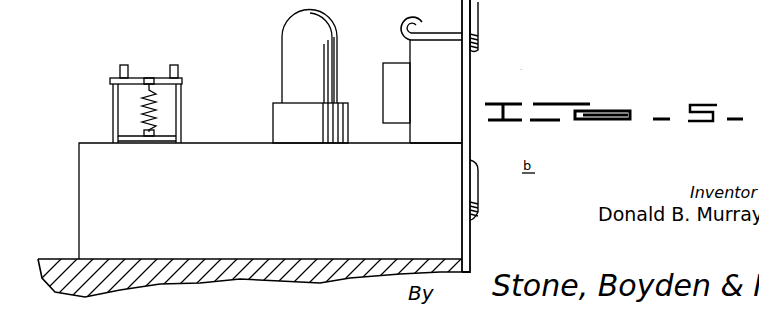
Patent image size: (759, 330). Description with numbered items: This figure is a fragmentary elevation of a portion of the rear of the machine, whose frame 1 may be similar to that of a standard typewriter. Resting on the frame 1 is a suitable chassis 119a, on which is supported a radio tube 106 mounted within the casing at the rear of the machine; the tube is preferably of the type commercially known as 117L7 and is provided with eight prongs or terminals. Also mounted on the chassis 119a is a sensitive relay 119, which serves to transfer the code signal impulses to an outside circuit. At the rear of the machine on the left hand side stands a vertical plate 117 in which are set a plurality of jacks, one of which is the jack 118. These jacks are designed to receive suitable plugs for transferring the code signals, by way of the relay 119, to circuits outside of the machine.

The frame 1 is at (148, 285).
The chassis 119a is at (204, 160).
The sensitive relay 119 is at (163, 100).
The radio tube 106 is at (300, 33).
The vertical plate 117 is at (470, 77).
The jack 118 is at (474, 28).